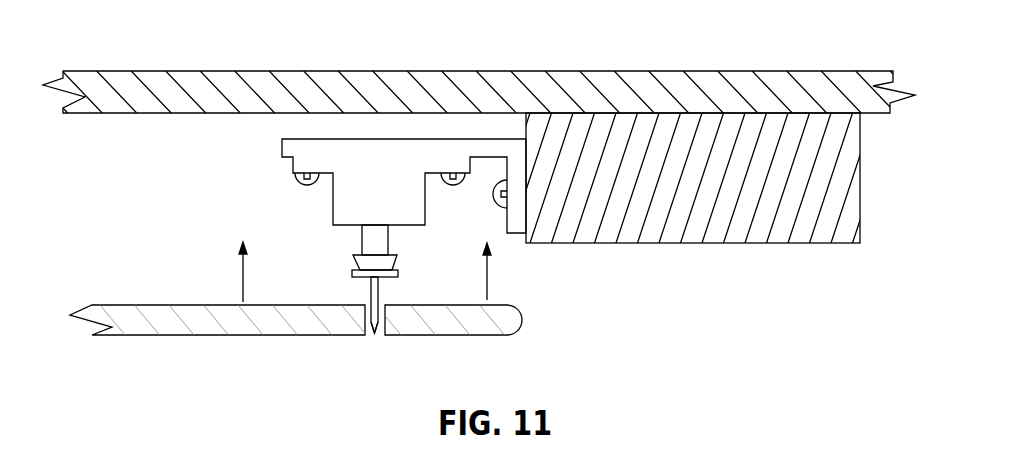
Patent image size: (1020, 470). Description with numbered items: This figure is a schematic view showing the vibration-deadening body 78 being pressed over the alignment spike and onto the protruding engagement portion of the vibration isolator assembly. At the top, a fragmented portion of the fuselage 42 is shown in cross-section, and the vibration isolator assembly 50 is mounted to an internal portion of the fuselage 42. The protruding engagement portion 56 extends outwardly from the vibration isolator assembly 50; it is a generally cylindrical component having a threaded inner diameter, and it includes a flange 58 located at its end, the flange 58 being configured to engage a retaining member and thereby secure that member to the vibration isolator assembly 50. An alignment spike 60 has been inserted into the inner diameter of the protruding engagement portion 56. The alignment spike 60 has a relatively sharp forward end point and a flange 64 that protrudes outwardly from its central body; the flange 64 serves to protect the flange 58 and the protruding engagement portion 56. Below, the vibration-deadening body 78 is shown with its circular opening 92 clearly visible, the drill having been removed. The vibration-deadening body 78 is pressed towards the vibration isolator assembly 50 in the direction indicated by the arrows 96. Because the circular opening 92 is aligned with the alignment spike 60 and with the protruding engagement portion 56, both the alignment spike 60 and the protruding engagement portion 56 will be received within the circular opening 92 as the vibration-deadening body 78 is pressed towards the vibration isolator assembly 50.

The fuselage 42 is at (357, 48).
The vibration isolator assembly 50 is at (296, 196).
The protruding engagement portion 56 is at (360, 247).
The flange 58 is at (398, 255).
The flange 64 is at (352, 273).
The alignment spike 60 is at (380, 300).
The circular opening 92 is at (377, 337).
The vibration-deadening body 78 is at (240, 337).
The arrows 96 is at (242, 277).